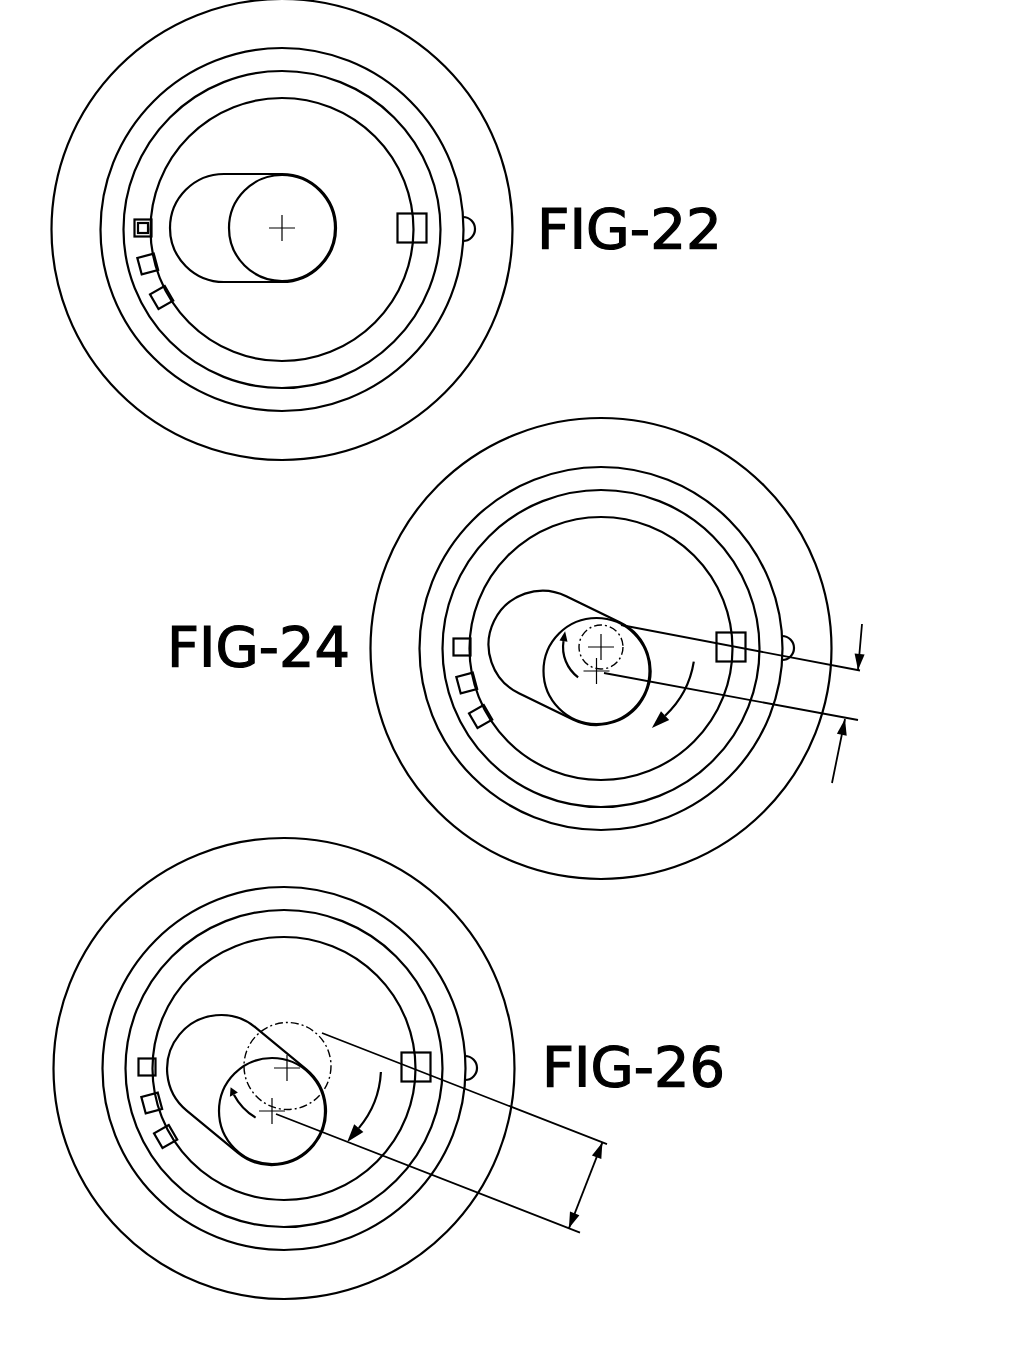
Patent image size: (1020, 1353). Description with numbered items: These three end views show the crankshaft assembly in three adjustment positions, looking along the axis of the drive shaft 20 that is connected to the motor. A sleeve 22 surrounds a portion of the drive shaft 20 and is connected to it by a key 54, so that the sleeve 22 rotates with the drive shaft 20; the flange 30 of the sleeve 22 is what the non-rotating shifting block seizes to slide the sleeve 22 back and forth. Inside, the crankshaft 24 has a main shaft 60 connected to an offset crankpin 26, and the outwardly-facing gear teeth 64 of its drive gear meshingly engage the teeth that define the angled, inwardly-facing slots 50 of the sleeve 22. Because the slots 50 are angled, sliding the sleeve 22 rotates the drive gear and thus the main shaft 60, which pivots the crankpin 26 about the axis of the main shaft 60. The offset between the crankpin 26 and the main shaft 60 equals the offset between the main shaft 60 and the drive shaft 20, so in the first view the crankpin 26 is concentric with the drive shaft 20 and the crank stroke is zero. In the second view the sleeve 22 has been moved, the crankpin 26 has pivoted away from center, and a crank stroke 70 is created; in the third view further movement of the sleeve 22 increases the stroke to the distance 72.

In FIG. 22, the drive shaft 20 is at (202, 140).
In FIG. 24, the drive shaft 20 is at (620, 535).
In FIG. 26, the drive shaft 20 is at (205, 983).
In FIG. 22, the sleeve 22 is at (388, 87).
In FIG. 24, the sleeve 22 is at (707, 513).
In FIG. 26, the sleeve 22 is at (212, 912).
In FIG. 22, the crankshaft 24 is at (250, 298).
In FIG. 24, the crankshaft 24 is at (503, 600).
In FIG. 26, the crankshaft 24 is at (209, 1150).
In FIG. 22, the crankpin 26 is at (298, 189).
In FIG. 24, the crankpin 26 is at (592, 708).
In FIG. 26, the crankpin 26 is at (255, 1153).
In FIG. 22, the flange 30 is at (461, 104).
In FIG. 24, the flange 30 is at (700, 451).
In FIG. 26, the flange 30 is at (475, 970).
In FIG. 22, the inwardly-facing slots 50 is at (157, 295).
In FIG. 24, the inwardly-facing slots 50 is at (458, 642).
In FIG. 26, the inwardly-facing slots 50 is at (167, 1140).
In FIG. 22, the key 54 is at (419, 218).
In FIG. 24, the key 54 is at (730, 632).
In FIG. 26, the key 54 is at (423, 1058).
In FIG. 22, the main shaft 60 is at (222, 178).
In FIG. 24, the main shaft 60 is at (535, 605).
In FIG. 26, the main shaft 60 is at (227, 1023).
In FIG. 22, the gear teeth 64 is at (144, 260).
In FIG. 24, the crank stroke 70 is at (833, 782).
In FIG. 26, the crank stroke distance 72 is at (585, 1187).